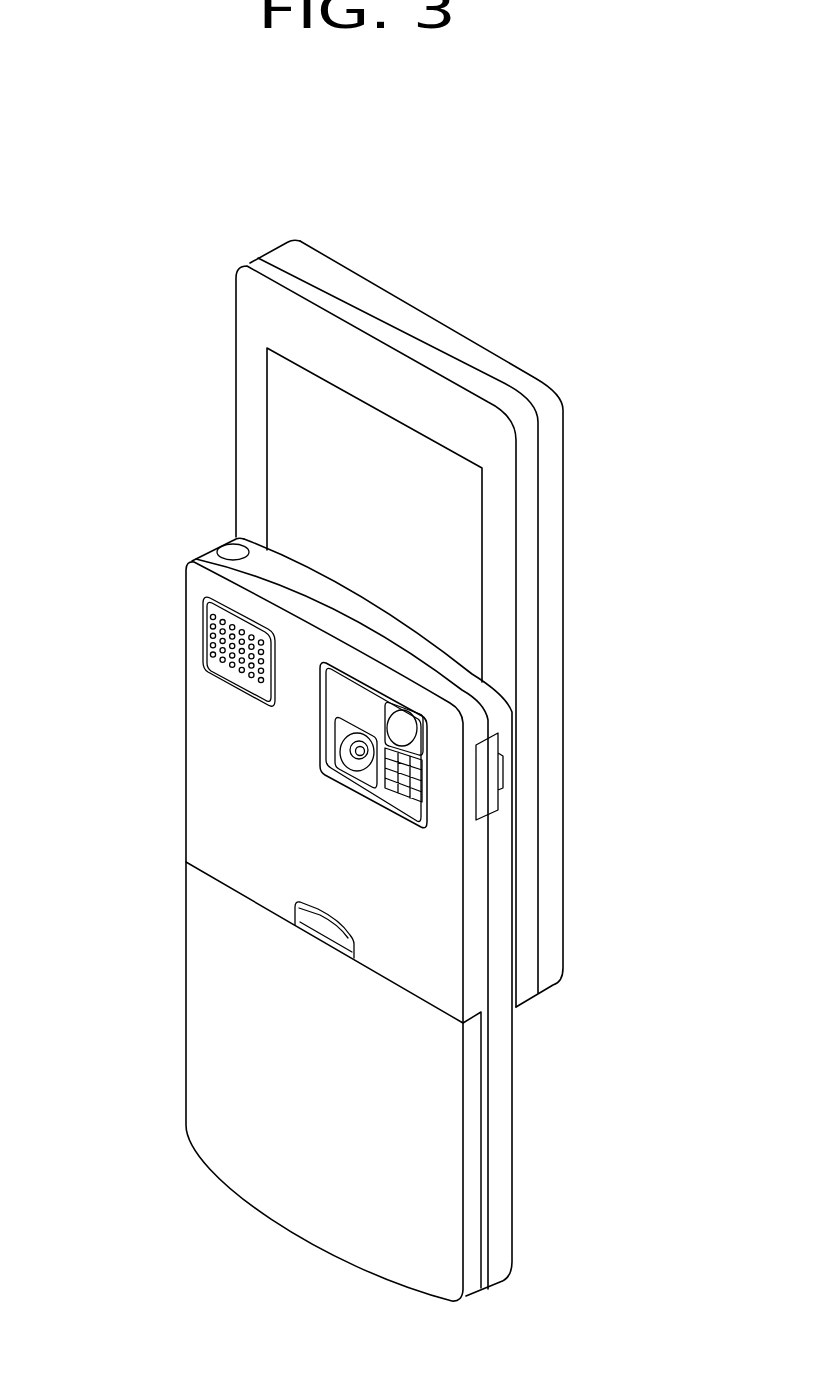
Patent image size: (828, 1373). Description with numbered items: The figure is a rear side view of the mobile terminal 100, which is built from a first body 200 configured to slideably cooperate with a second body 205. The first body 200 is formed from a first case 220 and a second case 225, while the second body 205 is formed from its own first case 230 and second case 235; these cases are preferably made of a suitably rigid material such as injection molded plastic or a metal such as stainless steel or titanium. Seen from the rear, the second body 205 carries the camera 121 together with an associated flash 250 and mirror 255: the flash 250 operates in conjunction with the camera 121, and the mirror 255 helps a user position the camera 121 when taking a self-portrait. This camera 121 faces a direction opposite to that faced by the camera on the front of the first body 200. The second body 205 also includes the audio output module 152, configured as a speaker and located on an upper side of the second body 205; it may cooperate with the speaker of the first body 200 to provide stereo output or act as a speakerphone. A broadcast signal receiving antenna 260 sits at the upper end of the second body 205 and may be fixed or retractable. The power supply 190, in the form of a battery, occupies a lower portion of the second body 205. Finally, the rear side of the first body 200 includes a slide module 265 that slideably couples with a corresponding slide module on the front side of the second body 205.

The mobile terminal 100 is at (530, 281).
The first body 200 is at (196, 405).
The second body 205 is at (156, 764).
The first case 220 is at (286, 252).
The second case 225 is at (265, 267).
The slide module 265 is at (316, 491).
The broadcast signal receiving antenna 260 is at (228, 548).
The audio output module 152 is at (208, 640).
The flash 250 is at (424, 820).
The camera 121 is at (360, 755).
The mirror 255 is at (401, 728).
The power supply 190 is at (203, 968).
The first case 230 is at (505, 1038).
The second case 235 is at (475, 972).